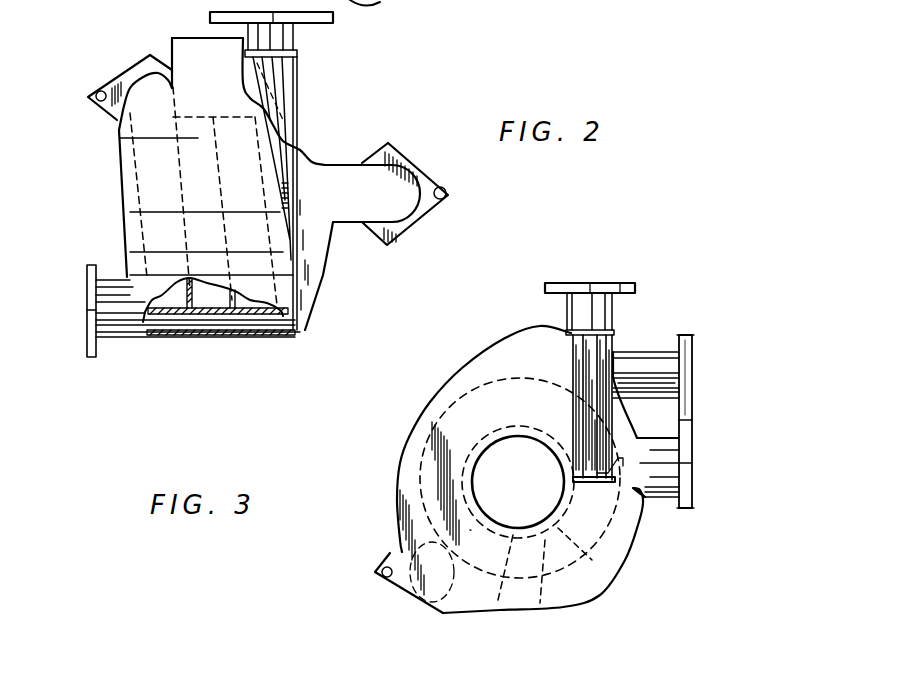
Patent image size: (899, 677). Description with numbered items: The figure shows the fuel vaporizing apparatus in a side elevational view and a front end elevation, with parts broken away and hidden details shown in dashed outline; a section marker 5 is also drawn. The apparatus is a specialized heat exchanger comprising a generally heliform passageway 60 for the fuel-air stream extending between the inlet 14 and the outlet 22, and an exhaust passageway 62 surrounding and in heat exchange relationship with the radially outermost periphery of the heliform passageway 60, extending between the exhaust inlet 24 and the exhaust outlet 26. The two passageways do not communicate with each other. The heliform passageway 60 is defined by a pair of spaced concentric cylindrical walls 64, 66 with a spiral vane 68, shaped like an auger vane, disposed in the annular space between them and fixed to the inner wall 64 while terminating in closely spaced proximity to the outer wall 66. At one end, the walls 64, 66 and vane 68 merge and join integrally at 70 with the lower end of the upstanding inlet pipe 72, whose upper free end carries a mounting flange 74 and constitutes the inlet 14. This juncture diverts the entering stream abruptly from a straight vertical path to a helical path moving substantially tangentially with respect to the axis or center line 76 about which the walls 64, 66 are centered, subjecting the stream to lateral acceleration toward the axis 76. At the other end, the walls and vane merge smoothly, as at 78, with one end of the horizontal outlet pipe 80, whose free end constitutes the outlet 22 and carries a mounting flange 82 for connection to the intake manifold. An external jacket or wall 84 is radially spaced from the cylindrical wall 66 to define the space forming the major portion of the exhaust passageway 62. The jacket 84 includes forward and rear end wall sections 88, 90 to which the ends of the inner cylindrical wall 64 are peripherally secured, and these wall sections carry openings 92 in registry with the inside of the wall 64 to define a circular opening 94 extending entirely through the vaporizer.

In FIG. 2, the section line 5- 5 is at (200, 32).
In FIG. 2, the inlet 14 is at (302, 38).
In FIG. 2, the outlet 22 is at (135, 85).
In FIG. 3, the outlet 22 is at (692, 375).
In FIG. 2, the inlet 24 is at (428, 186).
In FIG. 2, the outlet 26 is at (87, 278).
In FIG. 3, the outlet 26 is at (438, 617).
In FIG. 2, the heliform passageway 60 is at (255, 302).
In FIG. 3, the heliform passageway 60 is at (580, 570).
In FIG. 2, the exhaust passageway 62 is at (232, 337).
In FIG. 3, the exhaust passageway 62 is at (442, 417).
In FIG. 3, the cylindrical wall 64 is at (497, 605).
In FIG. 3, the cylindrical wall 66 is at (538, 606).
In FIG. 2, the spiral vane 68 is at (188, 296).
In FIG. 3, the juncture 70 is at (616, 470).
In FIG. 3, the upstanding conduit or pipe 72 is at (612, 350).
In FIG. 3, the mounting flange 74 is at (560, 283).
In FIG. 3, the axis or center line 76 is at (519, 485).
In FIG. 3, the merging juncture 78 is at (560, 383).
In FIG. 3, the horizontal outlet conduit or pipe 80 is at (652, 351).
In FIG. 2, the mounting flange 82 is at (113, 105).
In FIG. 3, the mounting flange 82 is at (686, 345).
In FIG. 3, the external jacket or wall 84 is at (462, 375).
In FIG. 3, the forward end wall section 88 is at (440, 473).
In FIG. 2, the rear end wall section 90 is at (118, 190).
In FIG. 3, the openings 92 is at (480, 463).
In FIG. 3, the circular opening 94 is at (506, 511).